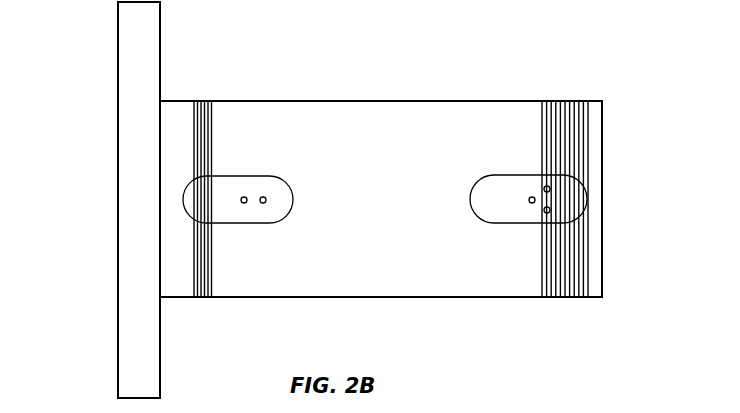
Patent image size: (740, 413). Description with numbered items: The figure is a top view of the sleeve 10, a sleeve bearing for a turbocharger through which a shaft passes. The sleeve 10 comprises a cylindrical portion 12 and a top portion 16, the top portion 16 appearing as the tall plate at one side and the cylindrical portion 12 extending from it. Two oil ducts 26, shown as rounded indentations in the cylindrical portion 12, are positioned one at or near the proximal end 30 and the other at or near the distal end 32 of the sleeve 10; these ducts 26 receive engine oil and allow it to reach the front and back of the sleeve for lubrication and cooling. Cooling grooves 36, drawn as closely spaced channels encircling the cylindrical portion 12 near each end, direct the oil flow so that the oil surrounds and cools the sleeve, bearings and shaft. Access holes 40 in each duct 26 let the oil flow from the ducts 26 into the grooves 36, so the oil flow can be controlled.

The sleeve 10 is at (413, 91).
The cylindrical portion 12 is at (378, 207).
The top portion 16 is at (128, 120).
The oil duct 26 is at (226, 185).
The proximal end 30 is at (203, 299).
The distal end 32 is at (565, 299).
The cooling groove 36 is at (199, 101).
The access hole 40 is at (245, 203).